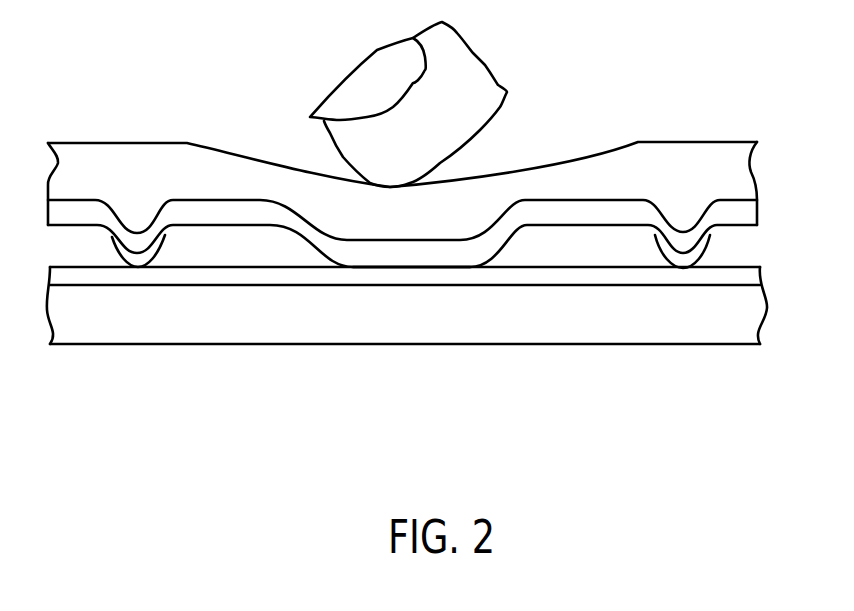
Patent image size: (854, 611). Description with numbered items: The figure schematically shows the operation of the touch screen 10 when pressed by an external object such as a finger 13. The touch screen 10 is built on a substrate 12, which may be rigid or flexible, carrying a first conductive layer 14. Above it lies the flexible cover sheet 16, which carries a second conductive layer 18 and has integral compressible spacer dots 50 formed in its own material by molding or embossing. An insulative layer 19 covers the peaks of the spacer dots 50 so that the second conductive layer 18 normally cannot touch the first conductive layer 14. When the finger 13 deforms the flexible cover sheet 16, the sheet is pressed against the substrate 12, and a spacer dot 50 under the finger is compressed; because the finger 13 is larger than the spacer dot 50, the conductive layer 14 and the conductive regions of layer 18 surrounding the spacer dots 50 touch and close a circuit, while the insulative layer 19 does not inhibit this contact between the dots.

The touch screen 10 is at (675, 118).
The substrate 12 is at (195, 345).
The finger 13 is at (463, 65).
The first conductive layer 14 is at (639, 285).
The flexible cover sheet 16 is at (212, 150).
The second conductive layer 18 is at (74, 200).
The insulative layer 19 is at (138, 250).
The integral compressible spacer dots 50 is at (397, 258).